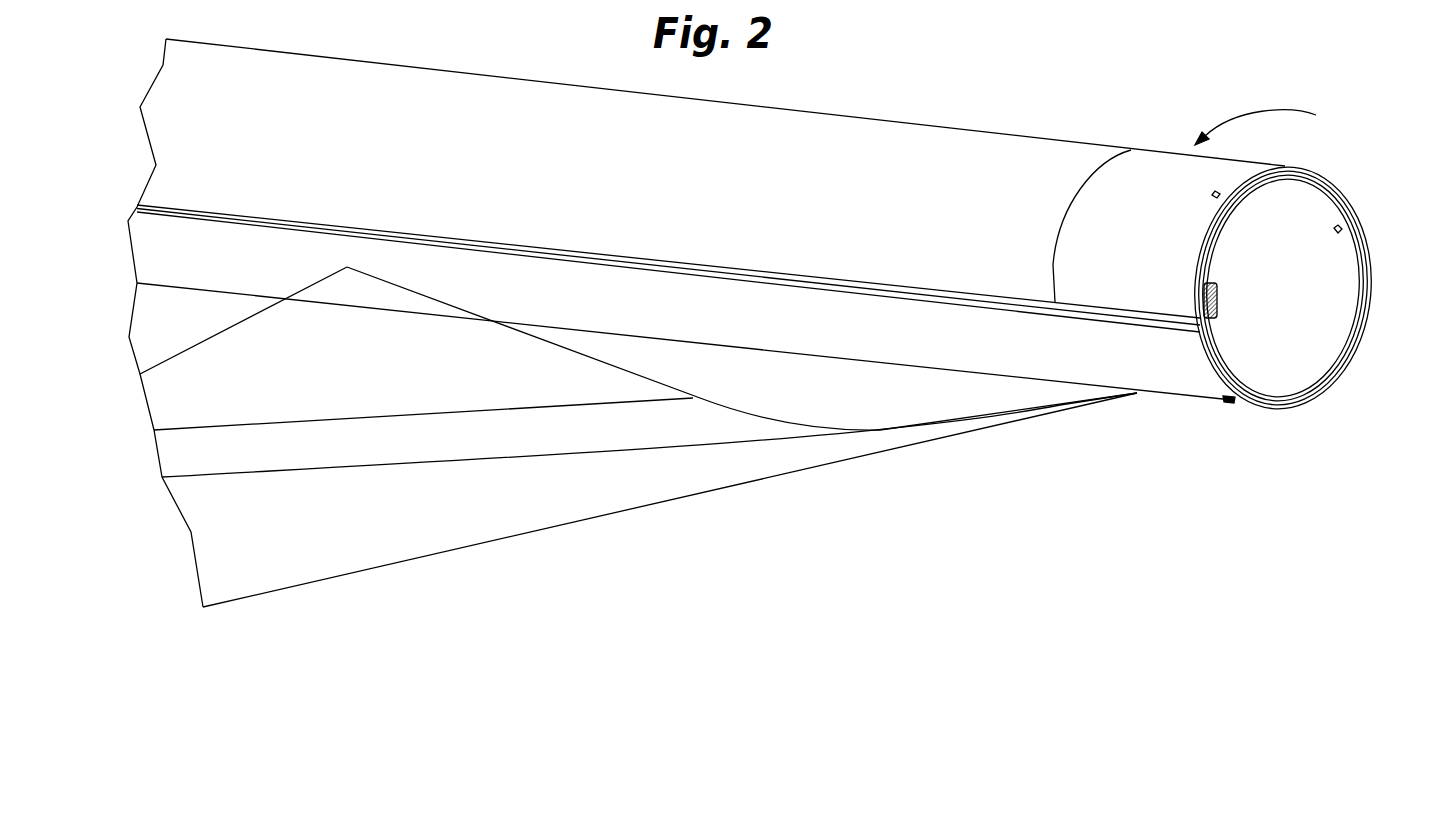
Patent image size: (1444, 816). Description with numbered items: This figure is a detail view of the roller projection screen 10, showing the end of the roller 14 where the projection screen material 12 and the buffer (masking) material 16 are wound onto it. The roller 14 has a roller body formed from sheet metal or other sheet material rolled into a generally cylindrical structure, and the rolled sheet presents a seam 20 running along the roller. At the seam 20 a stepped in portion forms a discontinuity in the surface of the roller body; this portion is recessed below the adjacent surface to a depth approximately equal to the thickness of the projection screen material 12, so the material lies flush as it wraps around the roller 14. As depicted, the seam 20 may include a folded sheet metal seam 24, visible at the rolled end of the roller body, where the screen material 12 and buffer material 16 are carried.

The roller projection screen 10 is at (880, 86).
The projection screen material 12 is at (873, 457).
The roller 14 is at (1327, 383).
The buffer (masking) material 16 is at (928, 405).
The seam 20 is at (1212, 320).
The folded sheet metal seam 24 is at (1220, 297).